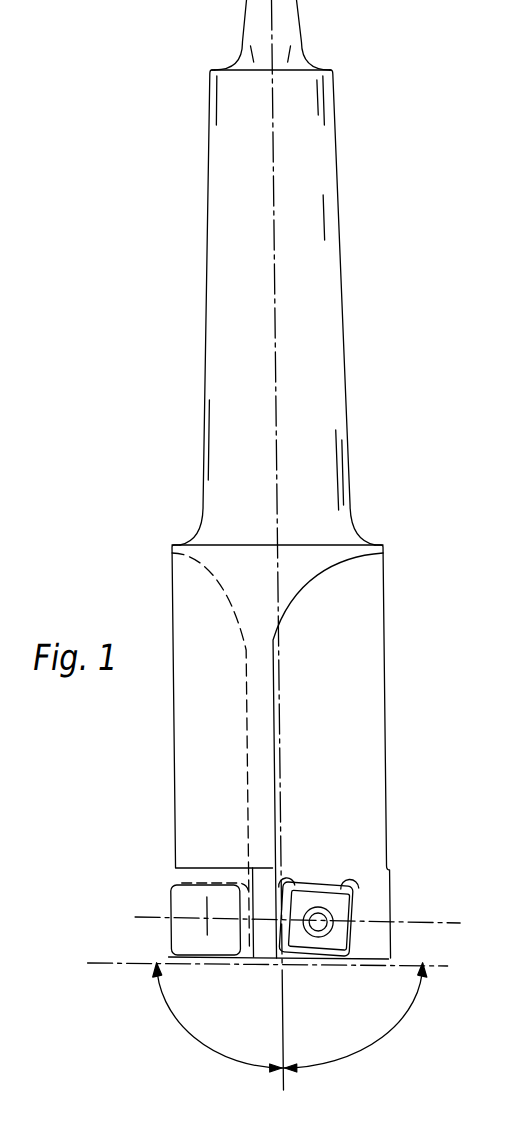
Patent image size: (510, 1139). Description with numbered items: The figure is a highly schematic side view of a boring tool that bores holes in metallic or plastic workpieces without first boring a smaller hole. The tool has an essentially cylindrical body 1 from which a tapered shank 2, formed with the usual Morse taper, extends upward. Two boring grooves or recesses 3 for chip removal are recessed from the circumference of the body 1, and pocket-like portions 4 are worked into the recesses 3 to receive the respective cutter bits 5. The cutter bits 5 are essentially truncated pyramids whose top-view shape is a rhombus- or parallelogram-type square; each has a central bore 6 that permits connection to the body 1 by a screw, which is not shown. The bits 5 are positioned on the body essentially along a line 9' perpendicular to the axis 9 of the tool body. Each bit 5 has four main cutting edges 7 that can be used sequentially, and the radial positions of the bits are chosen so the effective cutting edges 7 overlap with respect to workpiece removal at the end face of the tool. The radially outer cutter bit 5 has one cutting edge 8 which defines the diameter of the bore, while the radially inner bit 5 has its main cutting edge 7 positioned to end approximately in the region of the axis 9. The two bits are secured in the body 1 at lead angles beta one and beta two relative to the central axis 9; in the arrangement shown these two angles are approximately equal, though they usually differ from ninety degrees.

The cylindrical body 1 is at (376, 603).
The tapered shank 2 is at (324, 262).
The boring grooves or recesses 3 is at (354, 753).
The pocket-like portions 4 is at (322, 885).
The cutter bits 5 is at (305, 883).
The central bore 6 is at (342, 883).
The main cutting edges 7 is at (196, 958).
The cutting edge 8 is at (159, 951).
The axis of the tool body 9 is at (312, 545).
The line perpendicular to the axis 9' is at (304, 898).